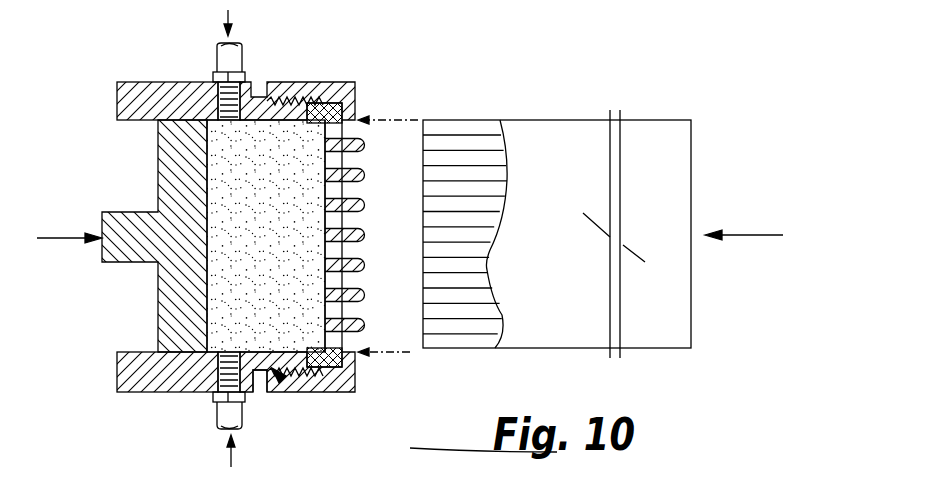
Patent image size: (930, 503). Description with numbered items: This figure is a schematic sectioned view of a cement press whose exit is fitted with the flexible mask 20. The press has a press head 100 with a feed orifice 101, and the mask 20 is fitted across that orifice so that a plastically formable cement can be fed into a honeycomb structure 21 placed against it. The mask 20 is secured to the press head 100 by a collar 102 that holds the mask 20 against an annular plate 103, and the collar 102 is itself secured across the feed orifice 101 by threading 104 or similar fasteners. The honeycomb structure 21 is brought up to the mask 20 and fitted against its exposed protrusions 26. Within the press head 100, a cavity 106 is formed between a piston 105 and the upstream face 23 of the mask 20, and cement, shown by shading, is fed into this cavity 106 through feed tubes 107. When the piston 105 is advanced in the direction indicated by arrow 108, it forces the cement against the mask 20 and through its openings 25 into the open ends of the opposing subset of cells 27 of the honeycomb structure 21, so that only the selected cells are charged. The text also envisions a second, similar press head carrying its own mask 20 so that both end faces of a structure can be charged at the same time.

The press head 100 is at (157, 78).
The feed orifice 101 is at (320, 150).
The collar 102 is at (350, 383).
The annular plate 103 is at (318, 375).
The threading 104 is at (290, 392).
The piston 105 is at (168, 187).
The cavity 106 is at (253, 248).
The feed tubes 107 is at (228, 60).
The arrow 108 is at (56, 241).
The flexible mask 20 is at (335, 108).
The honeycomb structure 21 is at (592, 113).
The upstream face 23 is at (323, 267).
The openings 25 is at (342, 162).
The protrusions 26 is at (362, 297).
The cells 27 is at (480, 158).